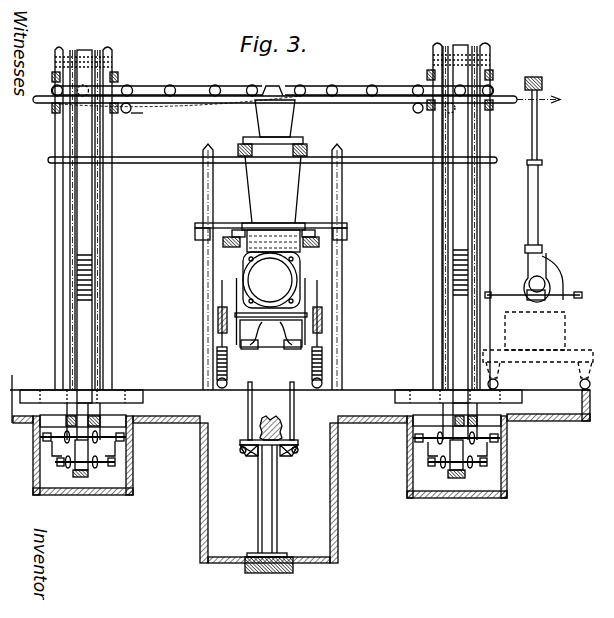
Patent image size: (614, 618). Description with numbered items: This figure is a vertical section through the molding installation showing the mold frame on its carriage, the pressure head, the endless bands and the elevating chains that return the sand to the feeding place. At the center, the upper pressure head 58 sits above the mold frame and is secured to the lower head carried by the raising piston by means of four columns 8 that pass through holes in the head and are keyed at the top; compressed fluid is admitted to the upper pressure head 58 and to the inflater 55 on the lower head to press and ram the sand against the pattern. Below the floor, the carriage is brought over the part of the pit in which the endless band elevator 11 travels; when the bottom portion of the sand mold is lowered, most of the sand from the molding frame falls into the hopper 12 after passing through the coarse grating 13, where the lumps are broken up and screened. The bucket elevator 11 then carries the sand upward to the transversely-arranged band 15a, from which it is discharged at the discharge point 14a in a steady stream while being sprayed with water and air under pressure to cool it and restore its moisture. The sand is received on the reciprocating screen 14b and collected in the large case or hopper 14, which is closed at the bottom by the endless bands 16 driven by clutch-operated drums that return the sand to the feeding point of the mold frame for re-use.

The columns 8 is at (247, 411).
The endless band elevator 11 is at (82, 478).
The hopper 12 is at (37, 446).
The coarse grating 13 is at (43, 437).
The case or hopper 14 is at (273, 189).
The discharge point 14a is at (292, 76).
The reciprocating screen 14b is at (292, 140).
The transversely-arranged band 15a is at (160, 74).
The endless bands 16 is at (258, 223).
The inflater 55 is at (279, 406).
The upper pressure head 58 is at (272, 279).